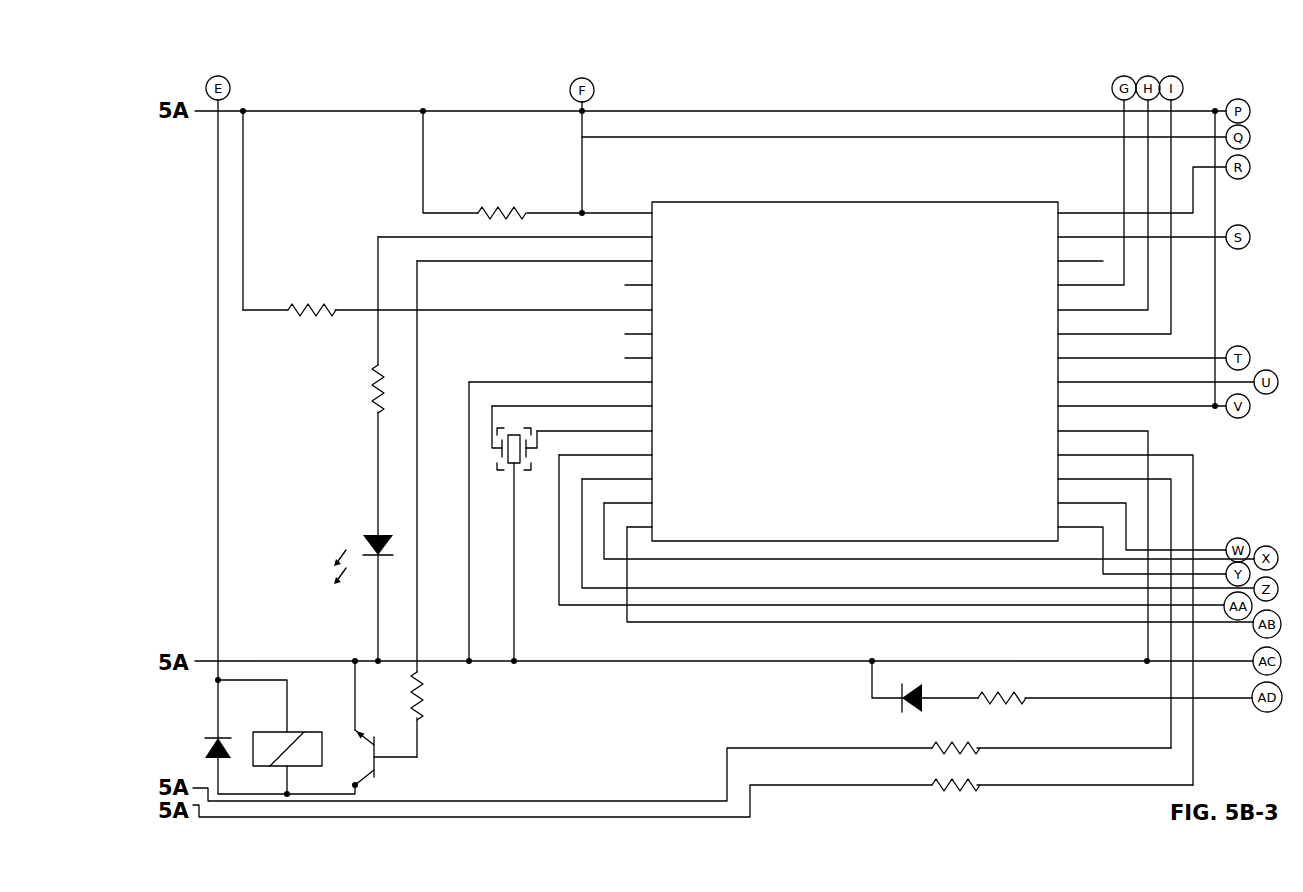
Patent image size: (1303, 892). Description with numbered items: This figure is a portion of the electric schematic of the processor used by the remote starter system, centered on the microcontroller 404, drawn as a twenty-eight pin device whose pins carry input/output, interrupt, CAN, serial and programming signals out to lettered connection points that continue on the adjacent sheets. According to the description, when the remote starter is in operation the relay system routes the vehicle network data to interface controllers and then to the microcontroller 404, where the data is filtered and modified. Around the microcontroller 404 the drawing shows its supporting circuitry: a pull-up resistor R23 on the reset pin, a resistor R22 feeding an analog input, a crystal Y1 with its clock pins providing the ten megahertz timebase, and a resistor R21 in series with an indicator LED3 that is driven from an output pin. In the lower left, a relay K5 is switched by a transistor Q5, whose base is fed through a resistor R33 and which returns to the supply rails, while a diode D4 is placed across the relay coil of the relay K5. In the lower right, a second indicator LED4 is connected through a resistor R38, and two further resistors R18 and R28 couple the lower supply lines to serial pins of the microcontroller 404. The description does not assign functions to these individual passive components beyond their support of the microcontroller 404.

The microcontroller 404 is at (953, 202).
The resistor 10K R23 is at (488, 212).
The resistor 10K R22 is at (447, 311).
The resistor 1K R21 is at (371, 389).
The resistor 10K R33 is at (398, 695).
The resistor 1K R38 is at (1016, 696).
The resistor 1K R18 is at (971, 751).
The resistor 1K R28 is at (942, 803).
The light emitting diode LED3 is at (351, 556).
The light emitting diode LED4 is at (886, 705).
The diode GS1A D4 is at (198, 720).
The relay TF2-12V K5 is at (306, 737).
The transistor Q5 is at (416, 765).
The 10MHz crystal Y1 is at (479, 462).